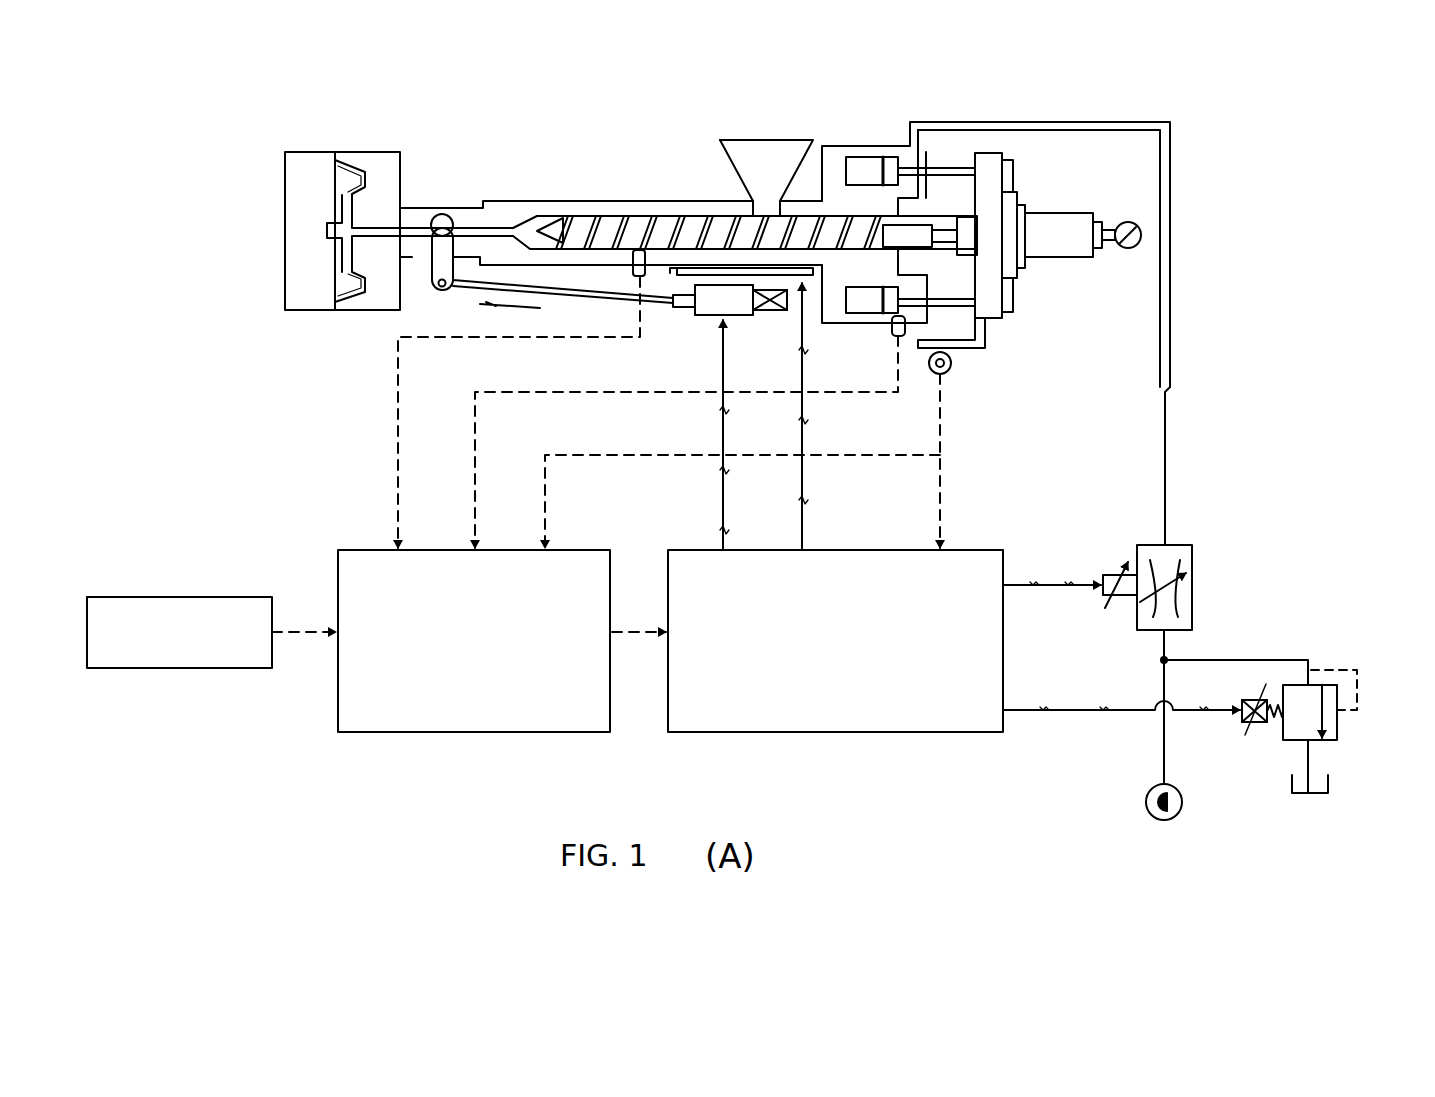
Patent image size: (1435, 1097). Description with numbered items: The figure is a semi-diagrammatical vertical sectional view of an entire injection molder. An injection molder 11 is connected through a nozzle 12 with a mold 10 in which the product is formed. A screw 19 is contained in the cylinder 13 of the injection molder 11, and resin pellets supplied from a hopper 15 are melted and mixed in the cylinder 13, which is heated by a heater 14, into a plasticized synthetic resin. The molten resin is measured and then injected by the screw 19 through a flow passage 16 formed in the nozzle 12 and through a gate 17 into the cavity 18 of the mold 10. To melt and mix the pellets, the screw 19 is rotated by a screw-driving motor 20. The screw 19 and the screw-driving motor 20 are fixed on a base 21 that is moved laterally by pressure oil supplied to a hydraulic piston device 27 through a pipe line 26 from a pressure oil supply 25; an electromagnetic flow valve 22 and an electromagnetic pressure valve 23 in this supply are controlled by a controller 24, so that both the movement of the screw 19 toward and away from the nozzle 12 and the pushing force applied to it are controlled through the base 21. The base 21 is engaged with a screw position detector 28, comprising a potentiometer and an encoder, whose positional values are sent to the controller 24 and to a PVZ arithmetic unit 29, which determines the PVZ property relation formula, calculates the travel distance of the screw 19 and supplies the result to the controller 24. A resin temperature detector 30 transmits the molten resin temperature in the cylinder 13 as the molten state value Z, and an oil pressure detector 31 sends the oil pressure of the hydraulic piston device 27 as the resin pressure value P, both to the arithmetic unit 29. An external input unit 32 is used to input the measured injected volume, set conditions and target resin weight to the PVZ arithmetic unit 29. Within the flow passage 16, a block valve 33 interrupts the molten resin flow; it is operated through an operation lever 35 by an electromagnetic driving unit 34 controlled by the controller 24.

The mold 10 is at (370, 122).
The injection molder 11 is at (723, 113).
The nozzle 12 is at (470, 216).
The cylinder 13 is at (588, 212).
The heater 14 is at (676, 274).
The hopper 15 is at (782, 145).
The flow passage 16 is at (420, 220).
The gate 17 is at (370, 230).
The cavity 18 is at (333, 243).
The screw 19 is at (660, 218).
The screw-driving motor 20 is at (1070, 222).
The base 21 is at (1007, 270).
The electromagnetic flow valve 22 is at (1187, 555).
The electromagnetic pressure valve 23 is at (1337, 727).
The controller 24 is at (712, 715).
The pressure oil supply 25 is at (1183, 796).
The pipe line 26 is at (1172, 297).
The hydraulic piston device 27 is at (867, 165).
The screw position detector 28 is at (958, 371).
The PVZ arithmetic unit 29 is at (515, 715).
The resin temperature detector 30 is at (636, 278).
The oil pressure detector 31 is at (893, 335).
The external input unit 32 is at (218, 608).
The block valve 33 is at (431, 240).
The electromagnetic driving unit 34 is at (708, 315).
The operation lever 35 is at (553, 290).